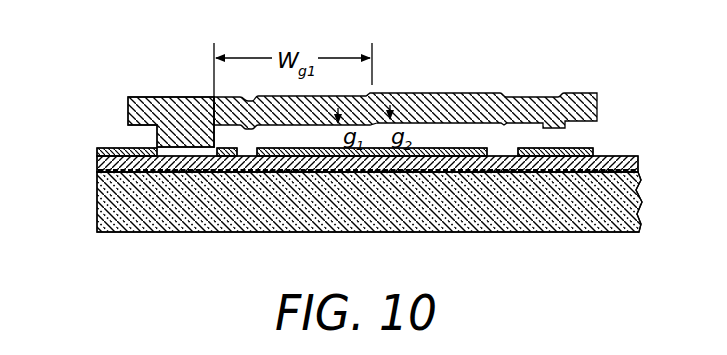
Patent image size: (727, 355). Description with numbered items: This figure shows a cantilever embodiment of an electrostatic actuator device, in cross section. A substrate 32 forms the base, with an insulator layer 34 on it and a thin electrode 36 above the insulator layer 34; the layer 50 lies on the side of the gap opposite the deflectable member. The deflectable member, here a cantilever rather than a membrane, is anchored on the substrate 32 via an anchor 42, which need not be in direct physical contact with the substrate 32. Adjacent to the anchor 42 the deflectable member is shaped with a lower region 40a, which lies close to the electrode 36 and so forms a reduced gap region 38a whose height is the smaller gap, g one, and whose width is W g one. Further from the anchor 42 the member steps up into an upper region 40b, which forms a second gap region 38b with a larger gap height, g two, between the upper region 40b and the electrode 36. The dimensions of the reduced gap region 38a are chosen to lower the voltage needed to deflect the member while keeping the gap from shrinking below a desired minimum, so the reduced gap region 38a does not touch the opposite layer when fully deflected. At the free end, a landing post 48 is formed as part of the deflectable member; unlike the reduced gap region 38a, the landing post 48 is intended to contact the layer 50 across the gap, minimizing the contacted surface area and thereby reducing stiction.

The substrate 32 is at (97, 203).
The insulator layer 34 is at (97, 164).
The electrode 36 is at (470, 150).
The reduced gap region 38a is at (267, 137).
The second gap region 38b is at (453, 133).
The lower region 40a is at (312, 120).
The upper region 40b is at (597, 80).
The anchor 42 is at (157, 138).
The landing post 48 is at (556, 131).
The layer 50 is at (587, 145).